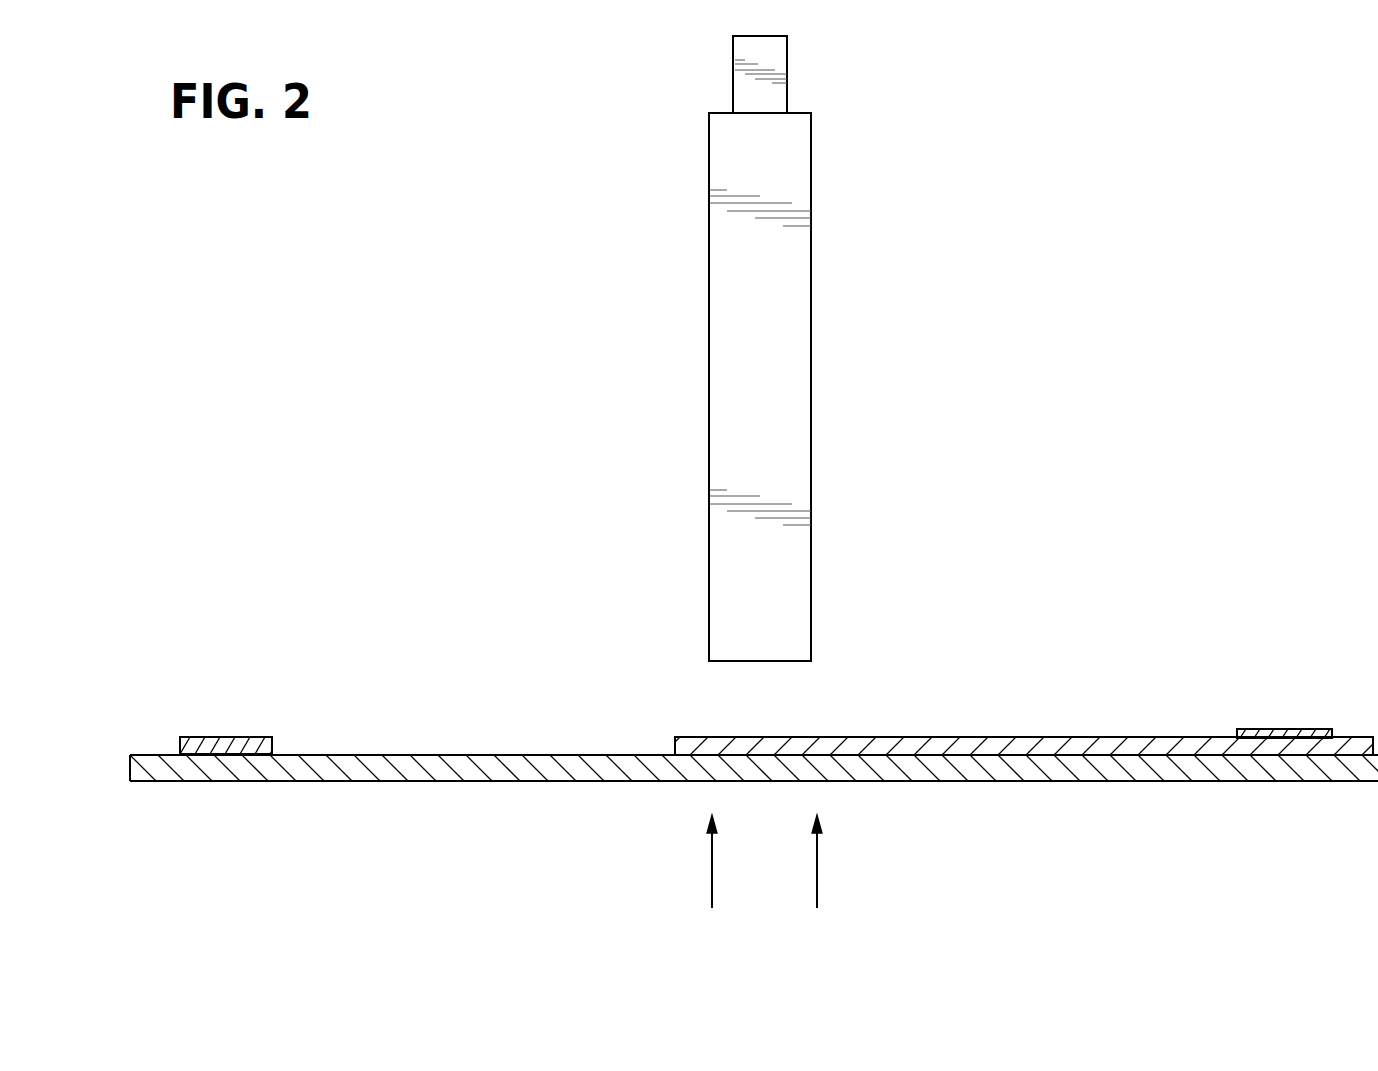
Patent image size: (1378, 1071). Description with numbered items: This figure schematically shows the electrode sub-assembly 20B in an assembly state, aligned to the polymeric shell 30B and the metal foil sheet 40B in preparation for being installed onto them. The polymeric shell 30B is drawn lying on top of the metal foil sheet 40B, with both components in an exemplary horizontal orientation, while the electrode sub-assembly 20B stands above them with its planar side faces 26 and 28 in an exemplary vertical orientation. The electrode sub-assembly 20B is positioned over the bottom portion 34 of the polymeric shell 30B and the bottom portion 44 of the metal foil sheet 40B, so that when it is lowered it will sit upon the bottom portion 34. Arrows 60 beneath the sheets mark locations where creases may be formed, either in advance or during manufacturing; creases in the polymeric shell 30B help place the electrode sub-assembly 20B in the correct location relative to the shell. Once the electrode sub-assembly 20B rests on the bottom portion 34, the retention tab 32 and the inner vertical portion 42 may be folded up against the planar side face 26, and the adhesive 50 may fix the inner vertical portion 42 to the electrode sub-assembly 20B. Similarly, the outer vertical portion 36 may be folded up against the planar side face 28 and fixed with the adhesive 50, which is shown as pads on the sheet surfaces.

The electrode sub-assembly 20B is at (781, 378).
The planar side face 26 is at (709, 383).
The planar side face 28 is at (811, 328).
The polymeric shell 30B is at (1043, 745).
The retention tab 32 is at (681, 742).
The bottom portion 34 is at (758, 742).
The outer vertical portion 36 is at (1148, 744).
The metal foil sheet 40B is at (475, 767).
The inner vertical portion 42 is at (393, 770).
The bottom portion 44 is at (730, 783).
The adhesive 50 is at (225, 738).
The arrows 60 is at (711, 866).